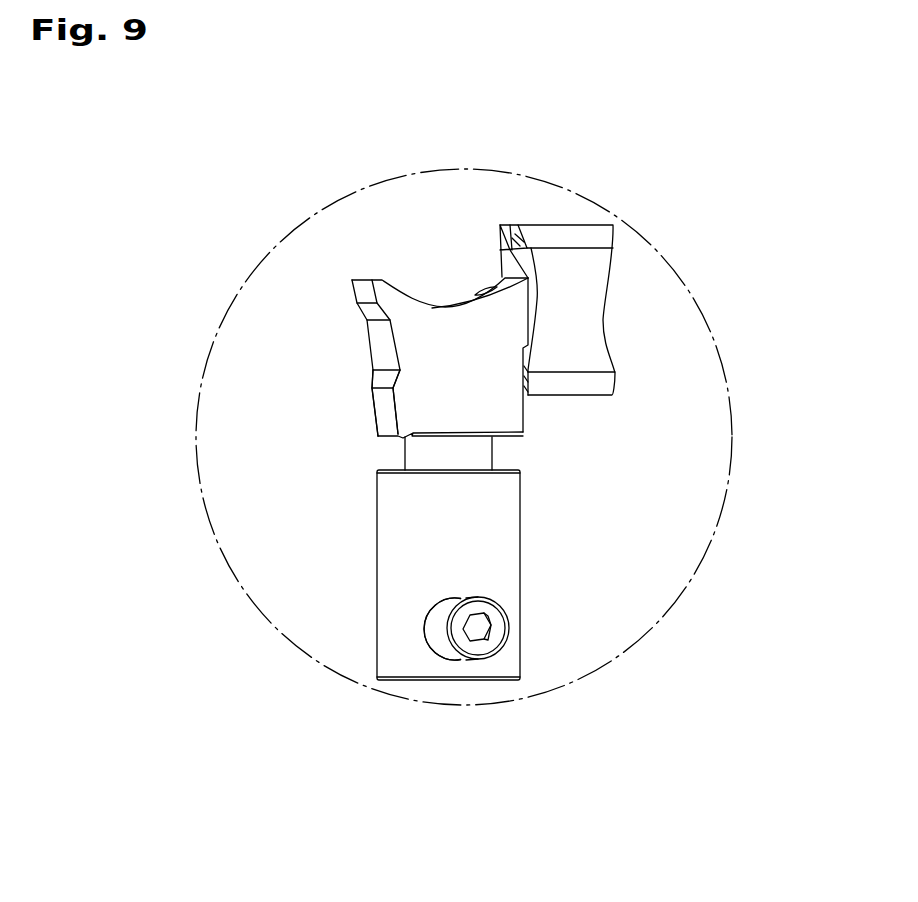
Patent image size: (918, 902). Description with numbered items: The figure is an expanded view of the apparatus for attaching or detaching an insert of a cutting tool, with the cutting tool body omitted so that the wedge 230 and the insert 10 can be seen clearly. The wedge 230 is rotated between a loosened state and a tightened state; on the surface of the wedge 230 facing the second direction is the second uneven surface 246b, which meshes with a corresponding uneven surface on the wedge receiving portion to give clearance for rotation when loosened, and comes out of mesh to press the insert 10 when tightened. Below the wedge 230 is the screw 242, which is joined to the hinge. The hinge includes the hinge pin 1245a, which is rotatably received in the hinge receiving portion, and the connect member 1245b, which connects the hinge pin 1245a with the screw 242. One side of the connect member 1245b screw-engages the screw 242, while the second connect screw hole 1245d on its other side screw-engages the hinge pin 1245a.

The wedge 230 is at (410, 312).
The insert 10 is at (601, 280).
The second uneven surface 246b is at (384, 418).
The screw 242 is at (495, 452).
The connect member 1245b is at (515, 548).
The hinge pin 1245a is at (492, 641).
The second connect screw hole 1245d is at (440, 641).